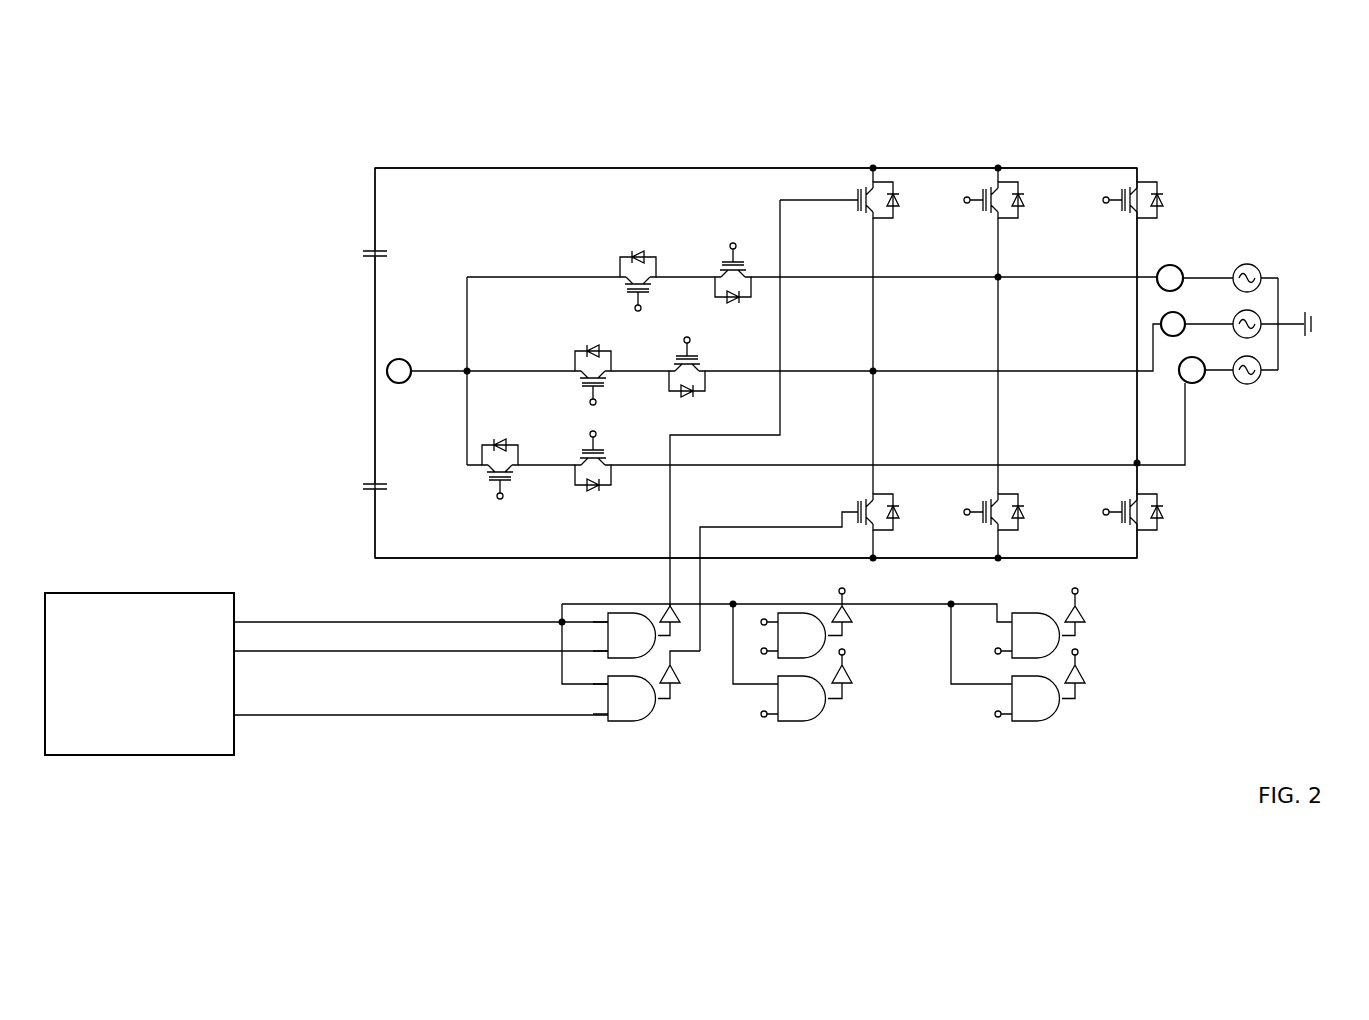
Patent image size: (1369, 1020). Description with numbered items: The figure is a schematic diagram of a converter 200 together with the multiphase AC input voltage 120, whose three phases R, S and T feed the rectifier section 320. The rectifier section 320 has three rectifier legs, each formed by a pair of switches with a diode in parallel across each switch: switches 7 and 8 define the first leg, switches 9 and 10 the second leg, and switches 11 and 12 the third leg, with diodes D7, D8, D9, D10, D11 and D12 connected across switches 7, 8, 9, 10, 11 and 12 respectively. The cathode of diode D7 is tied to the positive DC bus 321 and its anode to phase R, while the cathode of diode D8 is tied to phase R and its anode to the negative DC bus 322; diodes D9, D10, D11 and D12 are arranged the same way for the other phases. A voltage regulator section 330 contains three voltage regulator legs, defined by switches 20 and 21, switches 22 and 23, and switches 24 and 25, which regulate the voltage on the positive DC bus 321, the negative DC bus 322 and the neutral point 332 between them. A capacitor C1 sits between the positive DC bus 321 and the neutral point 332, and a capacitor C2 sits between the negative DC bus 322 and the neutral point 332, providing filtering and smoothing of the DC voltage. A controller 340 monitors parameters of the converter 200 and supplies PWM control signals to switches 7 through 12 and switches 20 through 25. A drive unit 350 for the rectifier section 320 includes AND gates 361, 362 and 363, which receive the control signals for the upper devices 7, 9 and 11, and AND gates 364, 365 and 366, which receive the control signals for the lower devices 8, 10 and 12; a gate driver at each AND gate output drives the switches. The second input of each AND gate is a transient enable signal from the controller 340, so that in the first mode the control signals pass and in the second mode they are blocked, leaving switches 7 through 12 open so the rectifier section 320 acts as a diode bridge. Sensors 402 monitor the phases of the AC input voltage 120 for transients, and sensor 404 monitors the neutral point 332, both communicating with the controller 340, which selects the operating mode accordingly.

The converter 200 is at (362, 104).
The multiphase AC input voltage 120 is at (1259, 316).
The rectifier section 320 is at (857, 160).
The positive DC bus 321 is at (808, 167).
The negative DC bus 322 is at (1072, 558).
The voltage regulator section 330 is at (440, 160).
The neutral point 332 is at (310, 363).
The controller 340 is at (145, 673).
The drive unit 350 is at (547, 724).
The AND gate 361 is at (806, 623).
The AND gate 362 is at (636, 631).
The AND gate 363 is at (1040, 623).
The AND gate 364 is at (806, 685).
The AND gate 365 is at (646, 686).
The AND gate 366 is at (1040, 685).
The sensors 402 is at (1186, 386).
The sensor 404 is at (393, 358).
The switch 7 is at (1003, 211).
The switch 8 is at (1006, 504).
The switch 9 is at (879, 198).
The switch 10 is at (863, 504).
The switch 11 is at (1140, 198).
The switch 12 is at (1141, 504).
The switch 20 is at (721, 272).
The switch 21 is at (612, 276).
The switch 22 is at (700, 367).
The switch 23 is at (576, 372).
The switch 24 is at (605, 458).
The switch 25 is at (508, 457).
The capacitor C1 is at (350, 259).
The capacitor C2 is at (359, 491).
The diode D7 is at (1030, 198).
The diode D8 is at (1030, 512).
The diode D9 is at (906, 198).
The diode D10 is at (900, 498).
The diode D11 is at (1177, 195).
The diode D12 is at (1177, 515).